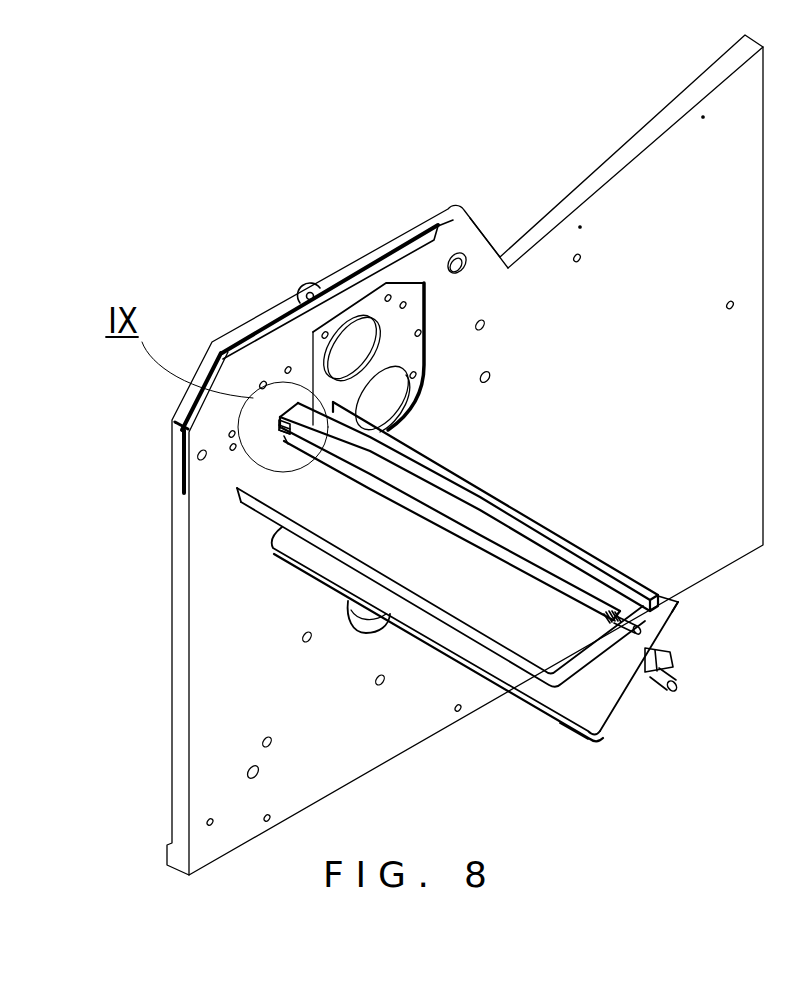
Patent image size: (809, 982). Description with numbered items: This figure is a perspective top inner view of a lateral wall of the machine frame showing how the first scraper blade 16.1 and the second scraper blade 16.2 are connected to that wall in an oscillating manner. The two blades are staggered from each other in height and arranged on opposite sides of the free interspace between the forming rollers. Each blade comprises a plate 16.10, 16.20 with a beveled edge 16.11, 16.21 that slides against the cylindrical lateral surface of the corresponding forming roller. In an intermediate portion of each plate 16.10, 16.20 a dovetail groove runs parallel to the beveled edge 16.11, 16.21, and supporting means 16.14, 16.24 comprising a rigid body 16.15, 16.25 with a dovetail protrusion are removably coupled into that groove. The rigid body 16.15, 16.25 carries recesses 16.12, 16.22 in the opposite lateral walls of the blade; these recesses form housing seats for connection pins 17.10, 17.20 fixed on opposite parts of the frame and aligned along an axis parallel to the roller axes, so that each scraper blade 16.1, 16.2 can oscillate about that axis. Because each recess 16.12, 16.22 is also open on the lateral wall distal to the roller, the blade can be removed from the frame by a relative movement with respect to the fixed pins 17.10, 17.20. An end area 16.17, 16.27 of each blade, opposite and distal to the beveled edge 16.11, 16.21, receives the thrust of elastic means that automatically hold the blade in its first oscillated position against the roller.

The first scraper blade 16.1 is at (525, 736).
The second scraper blade 16.2 is at (369, 497).
The plate of the first scraper blade 16.10 is at (519, 676).
The beveled edge of the first scraper blade 16.11 is at (681, 606).
The recess of the first scraper blade 16.12 is at (656, 700).
The supporting means of the first scraper blade 16.14 is at (680, 680).
The rigid body of the first supporting means 16.15 is at (684, 671).
The end area of the first scraper blade 16.17 is at (580, 712).
The plate of the second scraper blade 16.20 is at (424, 559).
The beveled edge of the second scraper blade 16.21 is at (410, 446).
The recess of the second scraper blade 16.22 is at (292, 440).
The supporting means of the second scraper blade 16.24 is at (583, 553).
The rigid body of the second supporting means 16.25 is at (469, 492).
The end area of the second scraper blade 16.27 is at (300, 508).
The connection pin of the first articulated connection means 17.10 is at (713, 713).
The connection pin of the second articulated connection means 17.20 is at (678, 600).